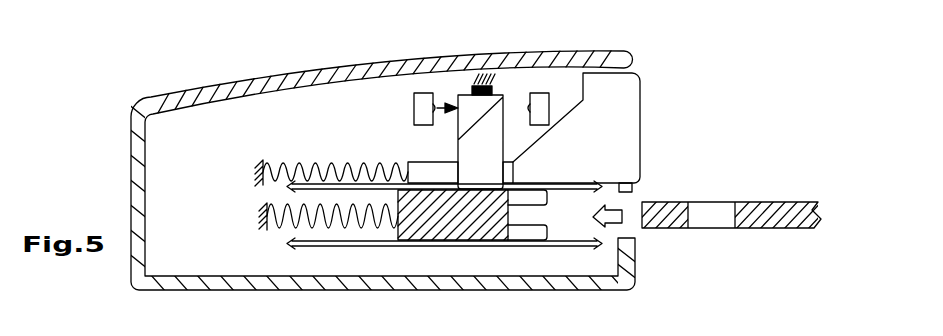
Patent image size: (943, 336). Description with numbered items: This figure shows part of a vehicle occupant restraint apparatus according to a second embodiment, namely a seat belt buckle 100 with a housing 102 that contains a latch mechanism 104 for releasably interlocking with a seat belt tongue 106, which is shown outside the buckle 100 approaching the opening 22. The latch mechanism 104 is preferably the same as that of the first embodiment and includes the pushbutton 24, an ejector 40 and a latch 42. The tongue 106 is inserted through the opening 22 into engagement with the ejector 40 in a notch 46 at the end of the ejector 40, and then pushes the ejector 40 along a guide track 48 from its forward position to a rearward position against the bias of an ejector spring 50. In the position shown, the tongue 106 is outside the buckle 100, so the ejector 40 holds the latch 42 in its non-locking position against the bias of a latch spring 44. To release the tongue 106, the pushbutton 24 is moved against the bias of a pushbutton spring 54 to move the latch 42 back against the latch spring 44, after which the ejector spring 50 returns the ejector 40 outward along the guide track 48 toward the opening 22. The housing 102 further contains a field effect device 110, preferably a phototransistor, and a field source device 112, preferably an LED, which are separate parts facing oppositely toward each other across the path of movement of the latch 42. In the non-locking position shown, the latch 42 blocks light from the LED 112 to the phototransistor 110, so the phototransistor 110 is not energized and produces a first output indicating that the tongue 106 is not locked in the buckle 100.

The seat belt buckle 100 is at (171, 66).
The housing 102 is at (294, 80).
The latch mechanism 104 is at (236, 159).
The pushbutton spring 54 is at (278, 163).
The ejector spring 50 is at (276, 220).
The guide track 48 is at (347, 248).
The ejector 40 is at (425, 226).
The notch 46 is at (546, 215).
The latch 42 is at (483, 110).
The latch spring 44 is at (472, 88).
The field source device 112 is at (414, 108).
The field effect device 110 is at (568, 100).
The pushbutton 24 is at (640, 123).
The opening 22 is at (638, 196).
The seat belt tongue 106 is at (767, 212).